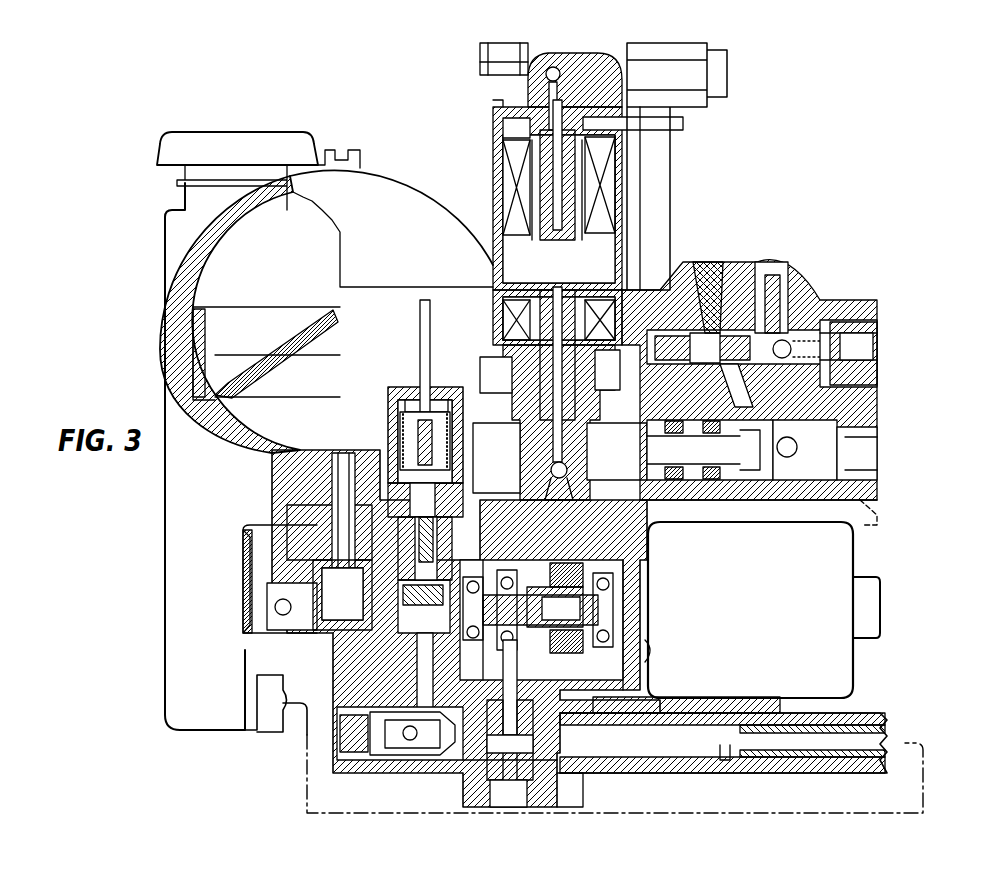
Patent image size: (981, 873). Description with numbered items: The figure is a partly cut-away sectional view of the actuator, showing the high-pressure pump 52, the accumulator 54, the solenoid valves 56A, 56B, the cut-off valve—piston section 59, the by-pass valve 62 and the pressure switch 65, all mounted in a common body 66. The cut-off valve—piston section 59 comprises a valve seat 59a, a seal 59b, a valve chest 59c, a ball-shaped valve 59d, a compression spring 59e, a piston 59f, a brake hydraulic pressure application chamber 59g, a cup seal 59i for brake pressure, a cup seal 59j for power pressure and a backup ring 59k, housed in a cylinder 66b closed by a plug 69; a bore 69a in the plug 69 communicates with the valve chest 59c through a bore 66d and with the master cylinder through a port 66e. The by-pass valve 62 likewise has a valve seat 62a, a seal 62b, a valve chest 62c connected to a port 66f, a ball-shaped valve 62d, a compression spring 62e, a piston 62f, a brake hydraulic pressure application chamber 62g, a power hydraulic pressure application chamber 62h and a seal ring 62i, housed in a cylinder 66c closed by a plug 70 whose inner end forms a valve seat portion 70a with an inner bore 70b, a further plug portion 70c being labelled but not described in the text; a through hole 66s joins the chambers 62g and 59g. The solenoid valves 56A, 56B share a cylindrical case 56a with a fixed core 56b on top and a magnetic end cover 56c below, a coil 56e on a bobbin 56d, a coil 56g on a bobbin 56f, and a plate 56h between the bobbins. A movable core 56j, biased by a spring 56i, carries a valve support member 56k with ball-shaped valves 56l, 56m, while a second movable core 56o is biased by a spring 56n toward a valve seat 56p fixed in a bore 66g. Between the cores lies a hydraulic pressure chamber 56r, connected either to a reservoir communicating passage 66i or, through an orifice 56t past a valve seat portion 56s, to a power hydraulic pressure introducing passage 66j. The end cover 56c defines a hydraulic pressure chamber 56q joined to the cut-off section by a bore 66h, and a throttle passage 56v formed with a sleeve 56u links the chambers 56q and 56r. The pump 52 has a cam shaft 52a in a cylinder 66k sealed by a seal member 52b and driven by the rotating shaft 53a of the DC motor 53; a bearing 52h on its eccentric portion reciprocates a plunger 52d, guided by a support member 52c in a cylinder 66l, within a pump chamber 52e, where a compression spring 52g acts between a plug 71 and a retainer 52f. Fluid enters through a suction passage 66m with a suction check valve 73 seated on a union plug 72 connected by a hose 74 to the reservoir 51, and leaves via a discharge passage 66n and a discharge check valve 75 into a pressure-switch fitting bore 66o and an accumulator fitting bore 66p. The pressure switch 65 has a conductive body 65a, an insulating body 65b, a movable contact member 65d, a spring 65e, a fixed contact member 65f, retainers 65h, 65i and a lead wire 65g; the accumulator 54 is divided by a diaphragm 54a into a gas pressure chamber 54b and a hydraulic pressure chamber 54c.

The reservoir 51 is at (170, 548).
The DC motor 53 is at (878, 694).
The rotating shaft 53a is at (615, 598).
The accumulator 54 is at (170, 272).
The diaphragm 54a is at (292, 325).
The gas pressure chamber 54b is at (279, 260).
The hydraulic pressure chamber 54c is at (322, 380).
The solenoid valve 56A is at (446, 143).
The solenoid valve 56B is at (434, 276).
The vertical cylindrical case 56a is at (630, 148).
The fixed core 56b is at (496, 103).
The end cover 56c is at (503, 345).
The bobbin 56d is at (503, 128).
The coil 56e is at (503, 160).
The bobbin 56f is at (493, 283).
The coil 56g is at (503, 322).
The plate 56h is at (615, 235).
The compression spring 56i is at (540, 175).
The movable core 56j is at (612, 210).
The valve support member 56k is at (533, 200).
The ball-shaped valve 56l is at (617, 190).
The ball-shaped valve 56m is at (510, 238).
The compression spring 56n is at (600, 258).
The movable core 56o is at (540, 300).
The valve seat 56p is at (480, 368).
The hydraulic pressure chamber 56q is at (499, 458).
The hydraulic pressure chamber 56r is at (493, 262).
The valve seat portion 56s is at (620, 172).
The orifice 56t is at (493, 112).
The sleeve 56u is at (598, 276).
The throttle passage 56v is at (600, 372).
The cut-off valve—piston section 59 is at (862, 510).
The valve seat 59a is at (785, 482).
The seal 59b is at (765, 480).
The valve chest 59c is at (878, 440).
The ball-shaped valve 59d is at (845, 430).
The compression spring 59e is at (800, 452).
The piston 59f is at (730, 480).
The brake hydraulic pressure application chamber 59g is at (745, 480).
The ring-shaped cup seal 59i is at (716, 480).
The ring-shaped cup seal 59j is at (682, 480).
The backup ring 59k is at (700, 480).
The by-pass valve 62 is at (840, 315).
The valve seat 62a is at (782, 262).
The seal 62b is at (768, 275).
The valve chest 62c is at (812, 300).
The ball-shaped valve 62d is at (835, 300).
The compression spring 62e is at (795, 345).
The piston 62f is at (722, 262).
The brake hydraulic pressure application chamber 62g is at (748, 262).
The power hydraulic pressure application chamber 62h is at (660, 345).
The seal ring 62i is at (700, 336).
The pressure switch 65 is at (383, 558).
The body 65a is at (355, 478).
The body 65b is at (400, 483).
The movable contact member 65d is at (390, 505).
The spring 65e is at (395, 398).
The fixed contact member 65f is at (338, 505).
The lead wire 65g is at (420, 318).
The retainer 65h is at (410, 396).
The retainer 65i is at (425, 441).
The body 66 is at (354, 775).
The cylinder 66b is at (655, 500).
The cylinder 66c is at (832, 305).
The bore 66d is at (855, 375).
The port 66e is at (871, 530).
The port 66f is at (795, 270).
The bore 66g is at (535, 478).
The bore 66h is at (617, 451).
The reservoir communicating passage 66i is at (568, 470).
The power hydraulic pressure introducing passage 66j is at (560, 74).
The cylinder 66k is at (650, 650).
The cylinder 66l is at (615, 685).
The suction passage 66m is at (655, 775).
The discharge passage 66n is at (417, 683).
The pressure-switch fitting bore 66o is at (400, 620).
The accumulator fitting bore 66p is at (300, 640).
The through hole 66s is at (725, 380).
The plug 69 is at (878, 490).
The bore 69a is at (878, 392).
The plug 70 is at (878, 312).
The valve seat portion 70a is at (878, 348).
The inner bore 70b is at (878, 330).
The passage 70c is at (878, 362).
The plug 71 is at (490, 790).
The union plug 72 is at (802, 763).
The suction check valve 73 is at (672, 705).
The hose 74 is at (888, 728).
The discharge check valve 75 is at (385, 762).
The high-pressure pump 52 is at (600, 618).
The cam shaft 52a is at (561, 608).
The seal member 52b is at (590, 575).
The support member 52c is at (520, 680).
The plunger 52d is at (533, 705).
The pump chamber 52e is at (527, 783).
The retainer 52f is at (593, 790).
The compression spring 52g is at (487, 760).
The bearing 52h is at (500, 665).